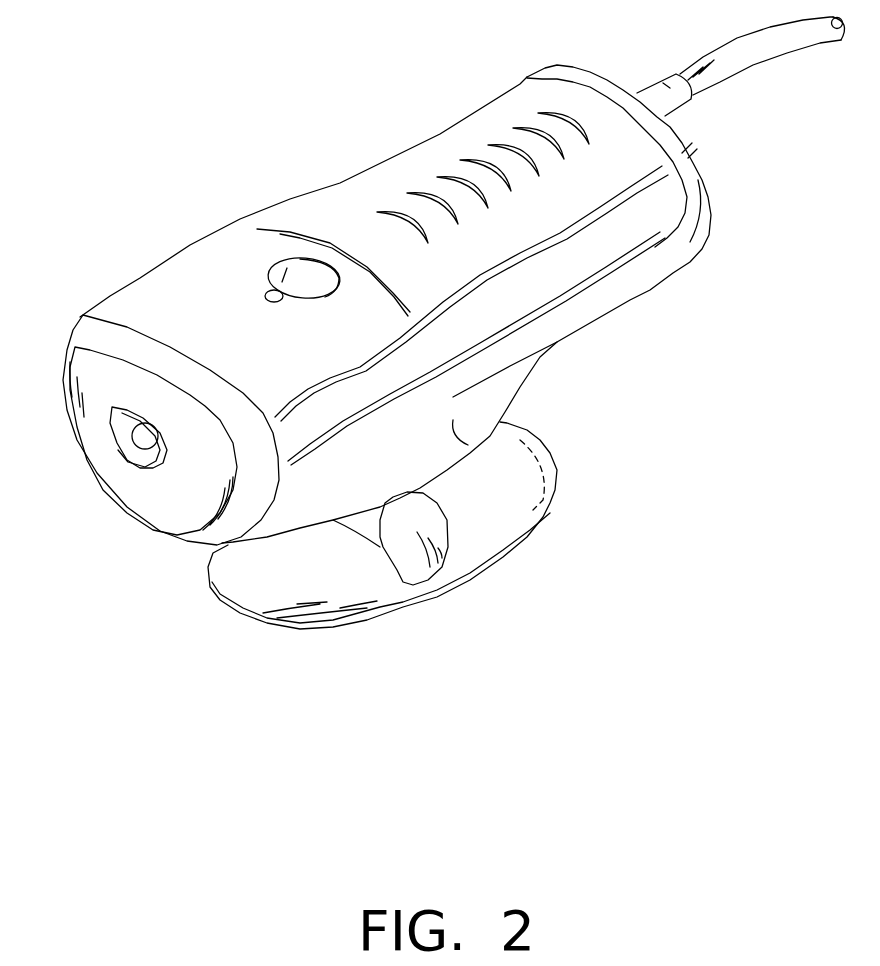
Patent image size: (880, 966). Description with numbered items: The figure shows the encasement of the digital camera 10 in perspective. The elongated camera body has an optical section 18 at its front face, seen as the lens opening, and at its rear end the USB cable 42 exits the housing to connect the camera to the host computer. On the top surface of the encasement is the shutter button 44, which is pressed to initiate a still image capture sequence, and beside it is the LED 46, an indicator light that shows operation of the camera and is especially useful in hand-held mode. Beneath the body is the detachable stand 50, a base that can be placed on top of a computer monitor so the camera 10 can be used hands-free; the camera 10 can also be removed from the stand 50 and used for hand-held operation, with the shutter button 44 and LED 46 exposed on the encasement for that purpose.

The digital camera 10 is at (627, 300).
The optical section 18 is at (138, 447).
The USB cable 42 is at (765, 63).
The shutter button 44 is at (302, 262).
The LED 46 is at (263, 290).
The detachable stand 50 is at (557, 470).